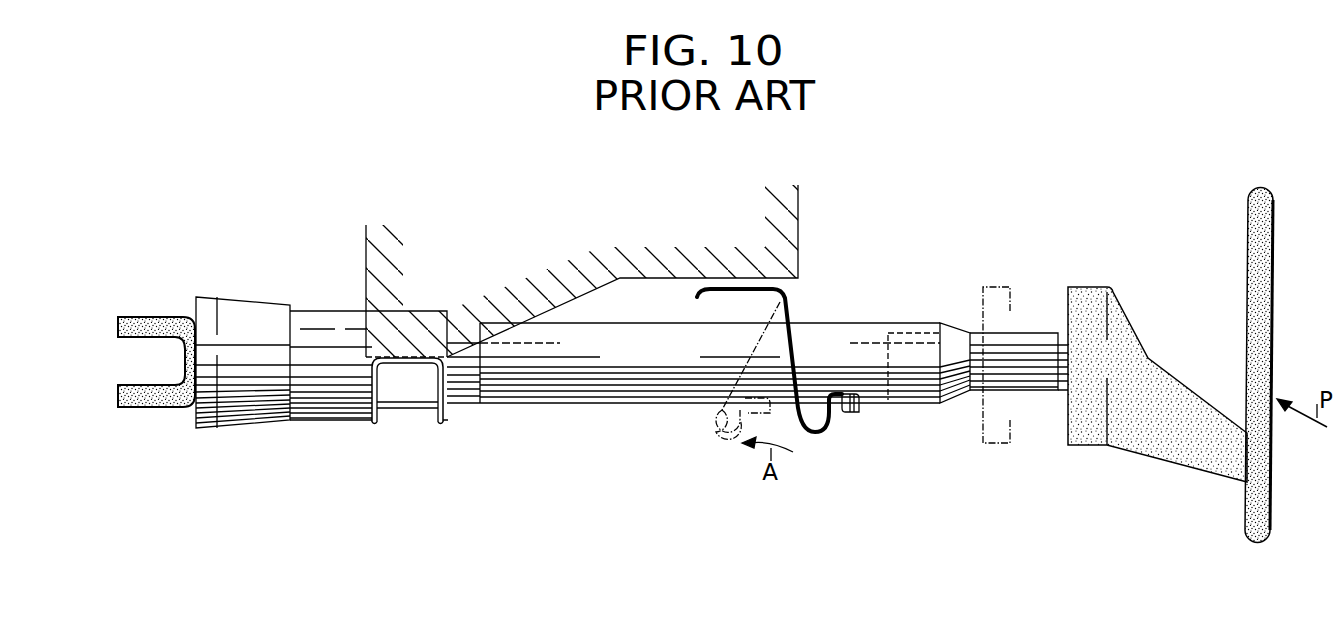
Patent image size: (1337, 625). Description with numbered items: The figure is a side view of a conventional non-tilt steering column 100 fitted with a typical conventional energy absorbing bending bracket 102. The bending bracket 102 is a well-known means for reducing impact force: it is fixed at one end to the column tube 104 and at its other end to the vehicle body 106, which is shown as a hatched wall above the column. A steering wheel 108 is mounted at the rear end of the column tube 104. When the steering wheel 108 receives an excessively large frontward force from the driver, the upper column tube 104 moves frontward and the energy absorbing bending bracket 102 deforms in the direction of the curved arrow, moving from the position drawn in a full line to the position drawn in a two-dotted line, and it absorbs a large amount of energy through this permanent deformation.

The non-tilt steering column 100 is at (593, 377).
The energy absorbing bending bracket 102 is at (793, 313).
The column tube 104 is at (630, 385).
The vehicle body 106 is at (798, 223).
The steering wheel 108 is at (1254, 275).